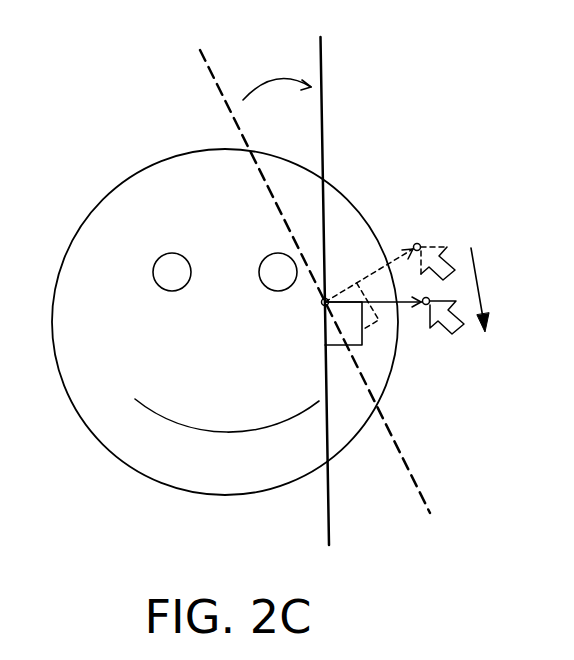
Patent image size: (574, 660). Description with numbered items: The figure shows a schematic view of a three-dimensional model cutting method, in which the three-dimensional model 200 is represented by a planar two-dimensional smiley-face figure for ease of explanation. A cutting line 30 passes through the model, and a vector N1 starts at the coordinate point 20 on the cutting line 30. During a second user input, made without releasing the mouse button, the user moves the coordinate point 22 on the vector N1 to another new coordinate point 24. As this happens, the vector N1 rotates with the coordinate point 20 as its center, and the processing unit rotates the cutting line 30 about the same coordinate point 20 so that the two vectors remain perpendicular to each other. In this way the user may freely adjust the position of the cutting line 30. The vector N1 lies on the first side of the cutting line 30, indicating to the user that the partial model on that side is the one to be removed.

The three-dimensional model 200 is at (88, 428).
The cutting line 30 is at (318, 275).
The coordinate point 20 is at (322, 306).
The coordinate point 22 is at (418, 243).
The coordinate point 24 is at (425, 306).
The vector N1 is at (362, 277).